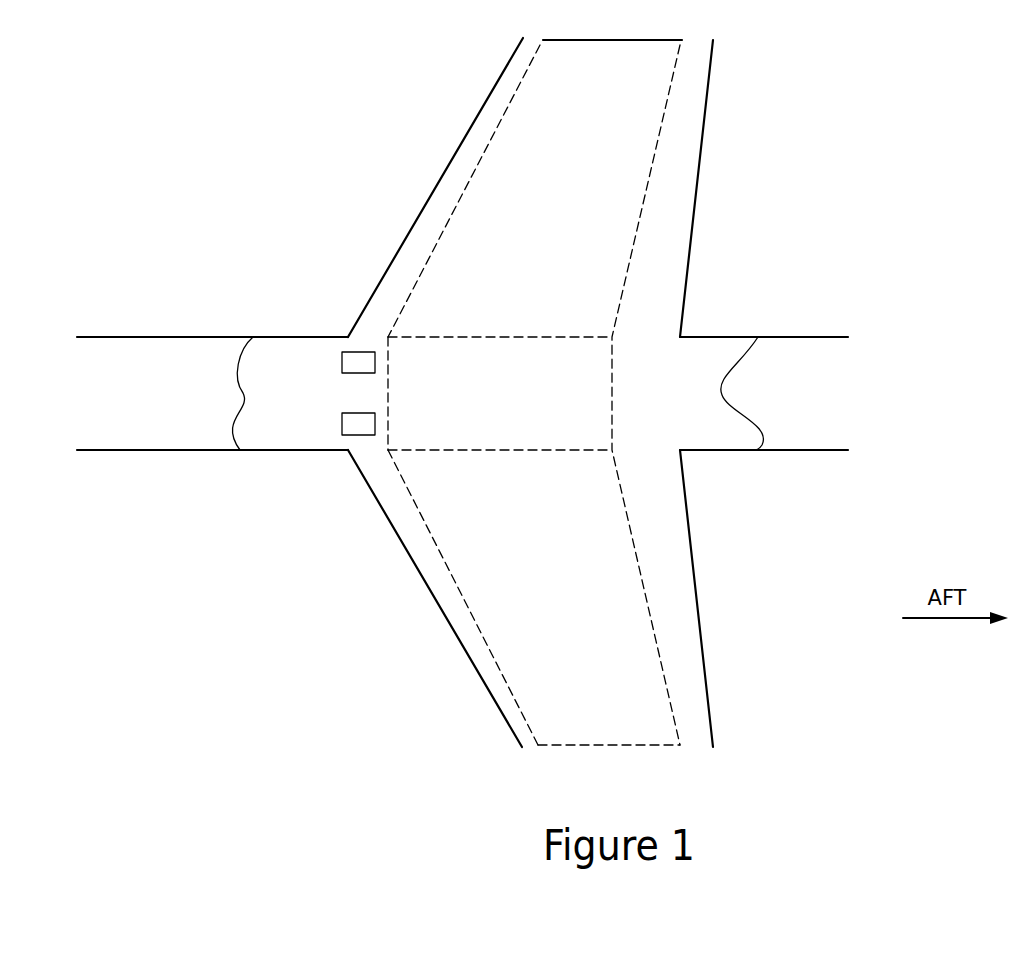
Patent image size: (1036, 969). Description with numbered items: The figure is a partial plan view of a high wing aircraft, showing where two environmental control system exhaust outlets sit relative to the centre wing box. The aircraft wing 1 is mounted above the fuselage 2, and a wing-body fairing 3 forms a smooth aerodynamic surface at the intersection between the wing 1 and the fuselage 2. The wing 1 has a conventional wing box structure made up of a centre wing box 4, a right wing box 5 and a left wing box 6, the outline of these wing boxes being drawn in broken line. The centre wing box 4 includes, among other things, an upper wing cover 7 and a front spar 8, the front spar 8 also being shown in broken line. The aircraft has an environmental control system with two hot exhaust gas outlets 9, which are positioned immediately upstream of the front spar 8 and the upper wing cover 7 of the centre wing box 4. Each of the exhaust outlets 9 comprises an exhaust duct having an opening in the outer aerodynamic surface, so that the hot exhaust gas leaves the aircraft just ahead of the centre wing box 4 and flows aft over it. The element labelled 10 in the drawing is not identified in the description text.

The aircraft wing 1 is at (685, 210).
The fuselage 2 is at (795, 345).
The wing-body fairing 3 is at (248, 435).
The centre wing box 4 is at (550, 450).
The right wing box 5 is at (520, 120).
The left wing box 6 is at (468, 587).
The upper wing cover 7 is at (493, 337).
The front spar 8 is at (388, 397).
The hot exhaust gas outlets 9 is at (342, 363).
The forward fuselage 10 is at (290, 435).